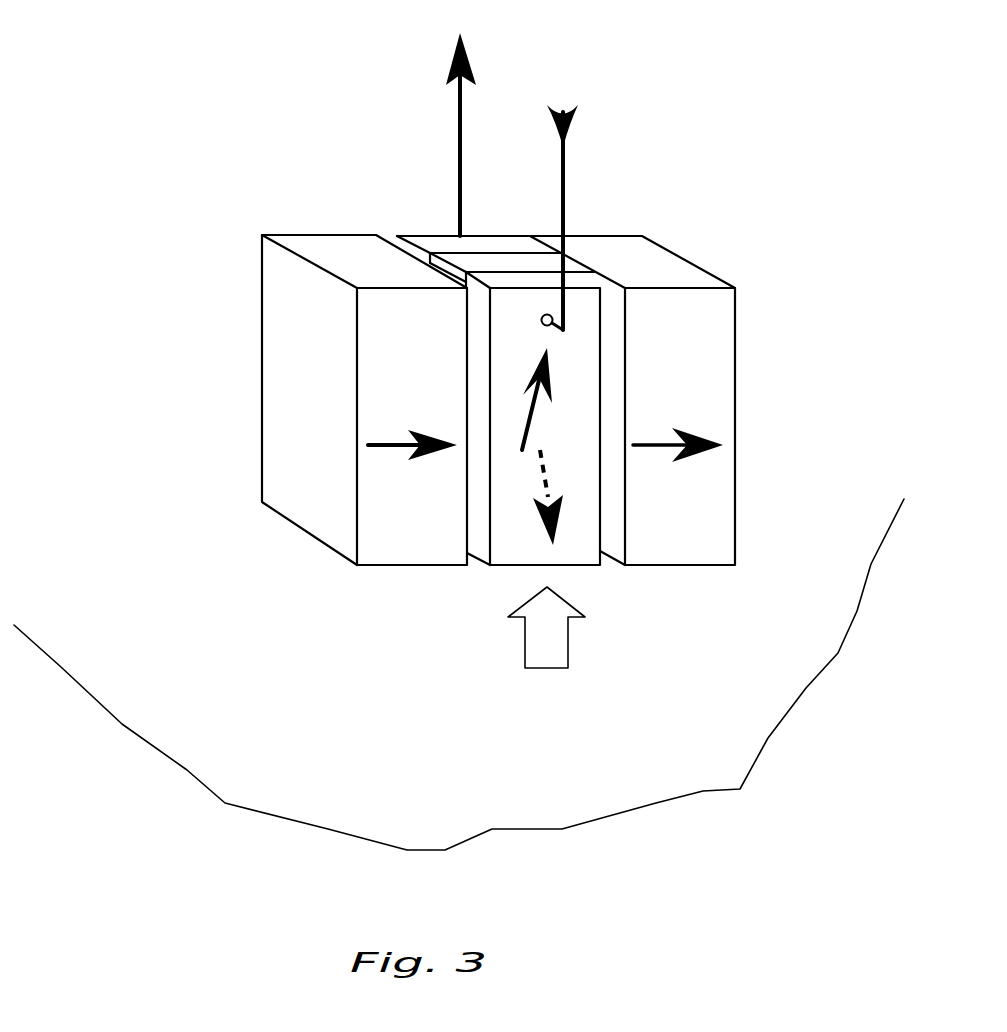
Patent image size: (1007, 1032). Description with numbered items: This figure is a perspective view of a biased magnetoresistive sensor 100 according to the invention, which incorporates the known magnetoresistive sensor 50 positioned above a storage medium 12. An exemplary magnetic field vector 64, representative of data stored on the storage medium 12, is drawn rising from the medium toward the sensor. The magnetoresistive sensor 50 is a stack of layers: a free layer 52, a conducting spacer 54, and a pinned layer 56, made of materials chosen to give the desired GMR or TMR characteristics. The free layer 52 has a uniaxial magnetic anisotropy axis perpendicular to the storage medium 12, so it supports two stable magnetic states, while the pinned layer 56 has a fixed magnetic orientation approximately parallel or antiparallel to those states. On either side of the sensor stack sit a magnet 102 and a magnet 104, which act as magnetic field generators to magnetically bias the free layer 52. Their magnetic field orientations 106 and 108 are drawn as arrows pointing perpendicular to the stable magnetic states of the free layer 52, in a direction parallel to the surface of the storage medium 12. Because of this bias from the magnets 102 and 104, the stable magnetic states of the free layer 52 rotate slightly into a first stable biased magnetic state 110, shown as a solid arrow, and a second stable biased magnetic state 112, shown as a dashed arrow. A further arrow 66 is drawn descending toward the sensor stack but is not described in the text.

The storage medium 12 is at (227, 803).
The magnetoresistive sensor 50 is at (430, 205).
The free layer 52 is at (509, 277).
The conducting spacer 54 is at (480, 262).
The pinned layer 56 is at (425, 243).
The magnetic field vector 64 is at (568, 635).
The sense current 66 is at (582, 115).
The biased magnetoresistive sensor 100 is at (700, 92).
The magnet 102 is at (275, 417).
The magnet 104 is at (737, 349).
The magnetic field orientation 106 is at (427, 462).
The magnetic field orientation 108 is at (688, 458).
The first stable biased magnetic state 110 is at (517, 417).
The second stable biased magnetic state 112 is at (538, 522).